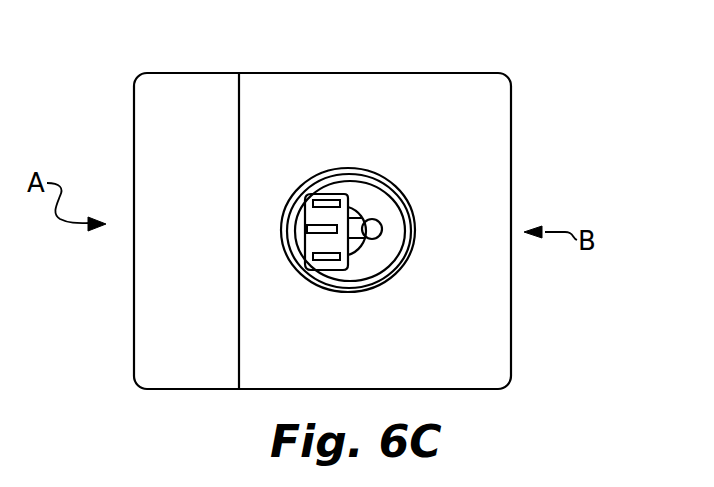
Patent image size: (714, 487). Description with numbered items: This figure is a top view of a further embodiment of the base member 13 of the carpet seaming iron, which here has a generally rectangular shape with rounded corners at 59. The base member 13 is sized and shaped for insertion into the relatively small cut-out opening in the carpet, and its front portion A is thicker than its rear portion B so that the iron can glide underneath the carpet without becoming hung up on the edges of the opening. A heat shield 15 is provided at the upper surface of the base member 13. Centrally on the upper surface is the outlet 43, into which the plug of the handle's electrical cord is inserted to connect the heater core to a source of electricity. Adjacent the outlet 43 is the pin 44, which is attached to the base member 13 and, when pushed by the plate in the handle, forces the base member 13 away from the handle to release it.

The base member 13 is at (134, 321).
The heat shield 15 is at (482, 341).
The outlet 43 is at (345, 194).
The pin 44 is at (368, 237).
The rounded corners 59 is at (518, 390).